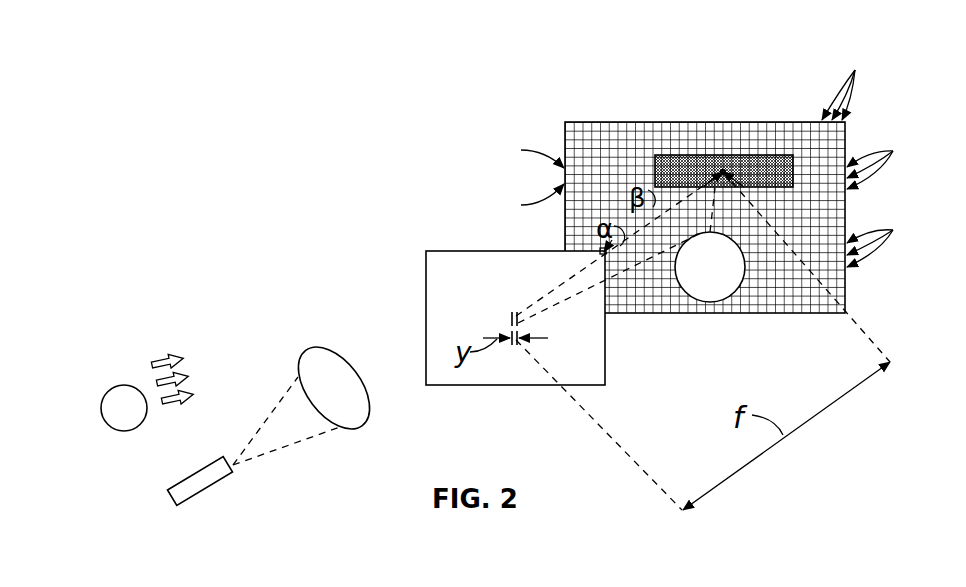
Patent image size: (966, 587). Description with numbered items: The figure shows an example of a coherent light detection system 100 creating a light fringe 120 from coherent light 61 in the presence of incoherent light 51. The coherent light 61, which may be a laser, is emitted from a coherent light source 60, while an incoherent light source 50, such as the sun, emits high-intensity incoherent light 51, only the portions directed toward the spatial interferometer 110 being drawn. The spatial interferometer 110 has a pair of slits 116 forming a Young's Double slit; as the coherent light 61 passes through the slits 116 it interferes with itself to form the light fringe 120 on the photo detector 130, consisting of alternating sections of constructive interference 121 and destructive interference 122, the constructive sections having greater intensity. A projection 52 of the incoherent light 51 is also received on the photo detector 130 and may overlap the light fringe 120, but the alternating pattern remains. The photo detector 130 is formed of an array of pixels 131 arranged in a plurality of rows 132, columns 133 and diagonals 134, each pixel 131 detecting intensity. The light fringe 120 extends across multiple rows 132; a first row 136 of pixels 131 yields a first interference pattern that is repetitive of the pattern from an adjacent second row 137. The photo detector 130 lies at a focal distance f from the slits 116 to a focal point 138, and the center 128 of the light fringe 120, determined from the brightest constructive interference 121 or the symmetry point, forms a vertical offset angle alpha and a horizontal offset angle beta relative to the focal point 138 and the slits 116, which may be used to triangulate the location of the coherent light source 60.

The coherent light detection system 100 is at (296, 126).
The photo detector 130 is at (624, 53).
The pixels 131 is at (568, 122).
The light fringe 120 is at (673, 148).
The sections of constructive interference 121 is at (721, 170).
The sections of destructive interference 122 is at (752, 166).
The center of the light fringe 128 is at (724, 172).
The focal point 138 is at (723, 172).
The columns 133 is at (848, 81).
The rows 132 is at (890, 164).
The diagonals 134 is at (890, 241).
The first row 136 is at (522, 151).
The second row 137 is at (522, 202).
The spatial interferometer 110 is at (426, 318).
The slits 116 is at (506, 318).
The projection 52 is at (728, 272).
The incoherent light source 50 is at (100, 395).
The incoherent light 51 is at (165, 356).
The coherent light source 60 is at (188, 476).
The coherent light 61 is at (278, 395).